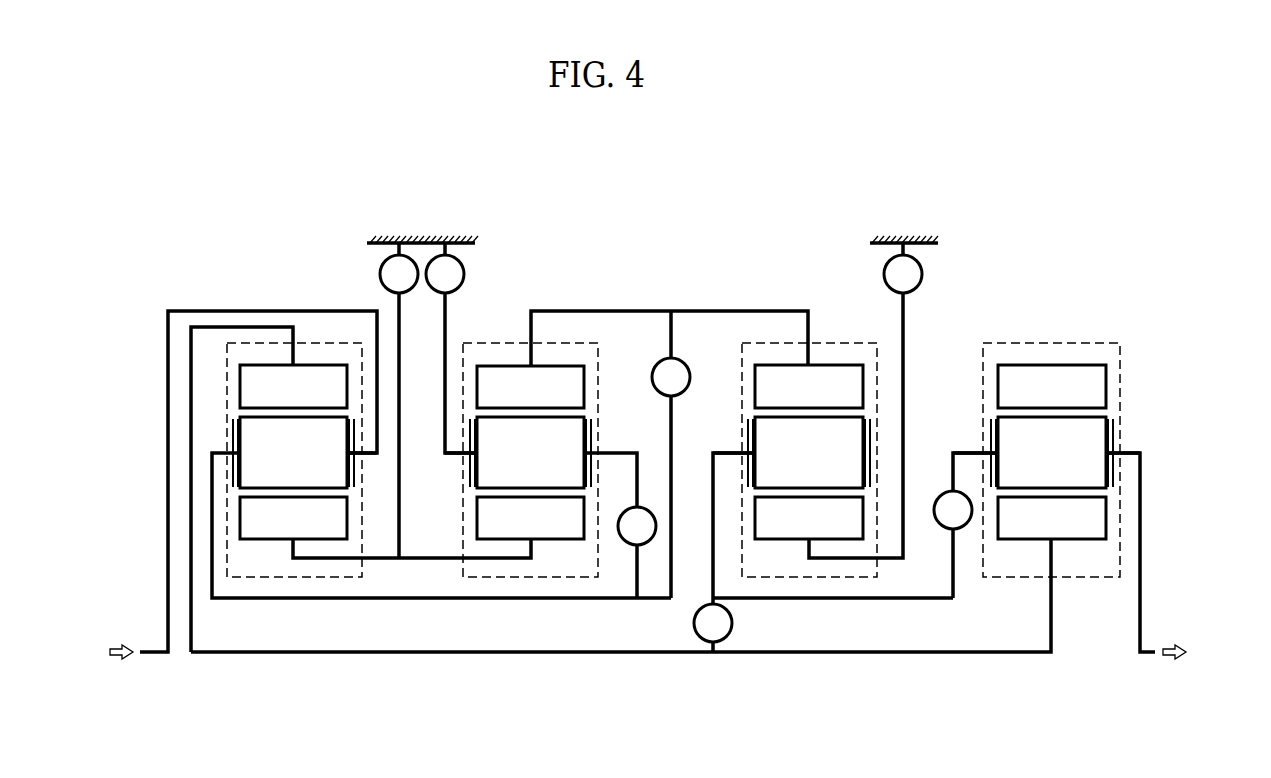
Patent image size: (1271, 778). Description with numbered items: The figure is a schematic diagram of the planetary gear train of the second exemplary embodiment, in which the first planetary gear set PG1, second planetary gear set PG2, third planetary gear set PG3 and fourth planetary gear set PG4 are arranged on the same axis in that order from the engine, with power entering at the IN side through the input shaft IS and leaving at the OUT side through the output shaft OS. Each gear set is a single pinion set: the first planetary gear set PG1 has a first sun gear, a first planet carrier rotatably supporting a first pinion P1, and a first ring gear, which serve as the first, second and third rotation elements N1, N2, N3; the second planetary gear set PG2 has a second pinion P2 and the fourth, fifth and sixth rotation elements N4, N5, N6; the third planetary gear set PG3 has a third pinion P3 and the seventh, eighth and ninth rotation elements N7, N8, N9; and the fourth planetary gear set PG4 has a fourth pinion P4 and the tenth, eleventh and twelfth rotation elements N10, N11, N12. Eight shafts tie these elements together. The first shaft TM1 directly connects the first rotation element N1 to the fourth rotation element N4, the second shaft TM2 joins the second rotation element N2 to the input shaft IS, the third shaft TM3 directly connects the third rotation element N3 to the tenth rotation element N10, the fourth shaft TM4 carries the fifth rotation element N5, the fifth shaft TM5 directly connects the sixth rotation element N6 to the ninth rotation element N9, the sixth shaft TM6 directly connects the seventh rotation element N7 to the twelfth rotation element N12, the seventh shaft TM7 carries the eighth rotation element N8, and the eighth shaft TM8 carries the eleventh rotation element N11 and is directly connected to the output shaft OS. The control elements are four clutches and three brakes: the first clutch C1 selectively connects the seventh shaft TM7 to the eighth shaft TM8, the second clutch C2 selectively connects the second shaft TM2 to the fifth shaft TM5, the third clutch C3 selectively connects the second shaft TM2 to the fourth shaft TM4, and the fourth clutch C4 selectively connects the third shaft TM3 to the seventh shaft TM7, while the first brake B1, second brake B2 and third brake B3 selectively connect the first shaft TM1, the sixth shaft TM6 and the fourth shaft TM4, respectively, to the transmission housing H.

The transmission housing H is at (413, 236).
The input IN is at (108, 643).
The output OUT is at (1196, 651).
The input shaft IS is at (153, 657).
The output shaft OS is at (1147, 656).
The first planetary gear set PG1 is at (257, 579).
The second planetary gear set PG2 is at (578, 579).
The third planetary gear set PG3 is at (788, 579).
The fourth planetary gear set PG4 is at (1087, 579).
The first rotation element N1 is at (293, 518).
The second rotation element N2 is at (375, 458).
The third rotation element N3 is at (293, 386).
The fourth rotation element N4 is at (530, 518).
The fifth rotation element N5 is at (458, 458).
The sixth rotation element N6 is at (530, 387).
The seventh rotation element N7 is at (809, 518).
The eighth rotation element N8 is at (725, 452).
The ninth rotation element N9 is at (809, 386).
The tenth rotation element N10 is at (1052, 518).
The eleventh rotation element N11 is at (965, 453).
The twelfth rotation element N12 is at (1052, 386).
The first pinion P1 is at (293, 452).
The second pinion P2 is at (530, 452).
The third pinion P3 is at (809, 452).
The fourth pinion P4 is at (1052, 452).
The first shaft TM1 is at (438, 560).
The second shaft TM2 is at (205, 600).
The third shaft TM3 is at (652, 655).
The fourth shaft TM4 is at (445, 373).
The fifth shaft TM5 is at (546, 311).
The sixth shaft TM6 is at (887, 560).
The seventh shaft TM7 is at (713, 575).
The eighth shaft TM8 is at (1133, 447).
The first brake B1 is at (399, 400).
The second brake B2 is at (903, 274).
The third brake B3 is at (445, 274).
The first clutch C1 is at (966, 525).
The second clutch C2 is at (671, 454).
The third clutch C3 is at (620, 525).
The fourth clutch C4 is at (713, 623).